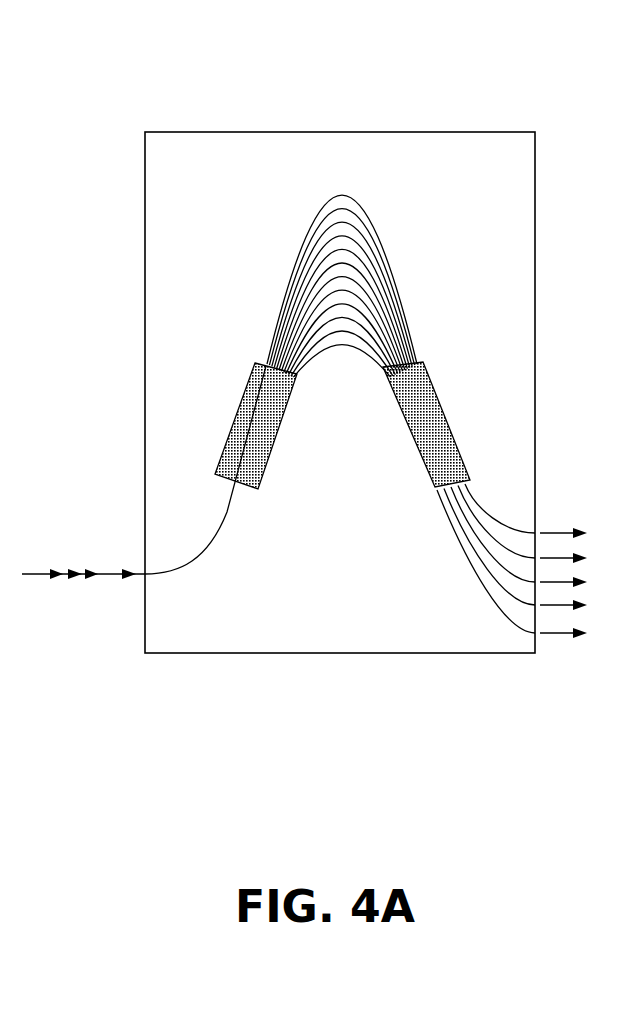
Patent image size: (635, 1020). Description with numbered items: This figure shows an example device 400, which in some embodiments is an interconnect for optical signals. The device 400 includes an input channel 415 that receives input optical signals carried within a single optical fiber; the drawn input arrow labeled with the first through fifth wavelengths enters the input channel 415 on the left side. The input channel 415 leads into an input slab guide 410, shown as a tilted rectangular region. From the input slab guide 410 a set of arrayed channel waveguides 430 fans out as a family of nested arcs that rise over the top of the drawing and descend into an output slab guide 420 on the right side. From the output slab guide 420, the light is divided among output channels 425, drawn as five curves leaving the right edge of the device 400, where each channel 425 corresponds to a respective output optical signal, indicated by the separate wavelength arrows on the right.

The device 400 is at (101, 62).
The input slab guide 410 is at (200, 463).
The input channel 415 is at (243, 648).
The output slab guide 420 is at (517, 453).
The output channels 425 is at (420, 649).
The arrayed channel waveguides 430 is at (370, 213).